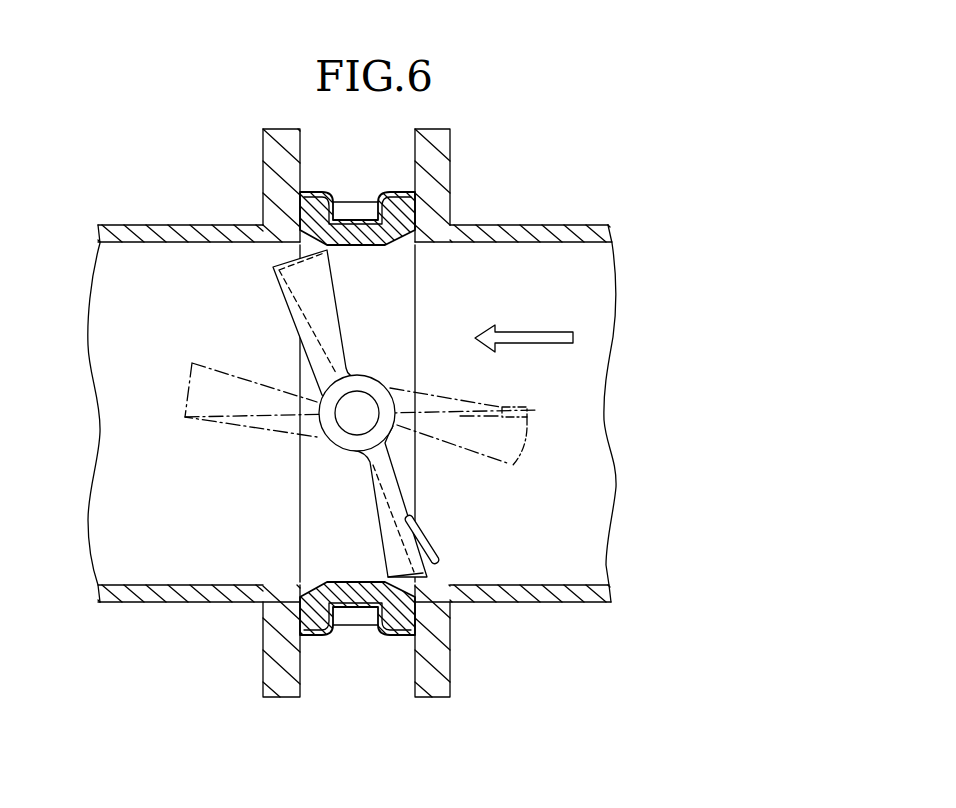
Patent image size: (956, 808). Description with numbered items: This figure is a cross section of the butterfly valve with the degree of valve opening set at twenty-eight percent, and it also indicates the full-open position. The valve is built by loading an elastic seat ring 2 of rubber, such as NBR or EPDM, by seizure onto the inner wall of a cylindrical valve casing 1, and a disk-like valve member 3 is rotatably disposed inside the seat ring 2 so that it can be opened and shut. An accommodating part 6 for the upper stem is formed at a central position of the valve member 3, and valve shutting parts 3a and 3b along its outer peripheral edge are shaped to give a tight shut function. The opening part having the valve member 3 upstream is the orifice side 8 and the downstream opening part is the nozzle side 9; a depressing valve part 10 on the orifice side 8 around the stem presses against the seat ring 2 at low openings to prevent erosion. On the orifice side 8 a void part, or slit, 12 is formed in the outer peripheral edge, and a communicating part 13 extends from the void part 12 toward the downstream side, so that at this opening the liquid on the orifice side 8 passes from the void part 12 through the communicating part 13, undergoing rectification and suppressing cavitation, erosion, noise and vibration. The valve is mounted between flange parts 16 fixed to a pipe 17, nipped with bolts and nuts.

The valve casing 1 is at (338, 612).
The elastic seat ring 2 is at (366, 600).
The valve member 3 is at (235, 425).
The valve shutting part 3a is at (438, 549).
The valve shutting part 3b is at (283, 271).
The accommodating part 6 is at (372, 388).
The orifice side 8 is at (440, 578).
The nozzle side 9 is at (292, 247).
The depressing valve part 10 is at (515, 436).
The void part (slit) 12 is at (426, 546).
The communicating part (communicating hole) 13 is at (385, 537).
The flange part 16 is at (275, 652).
The pipe 17 is at (151, 602).